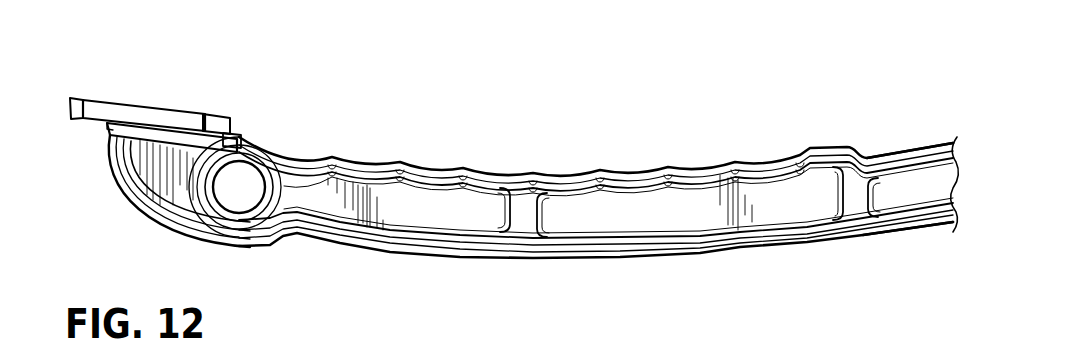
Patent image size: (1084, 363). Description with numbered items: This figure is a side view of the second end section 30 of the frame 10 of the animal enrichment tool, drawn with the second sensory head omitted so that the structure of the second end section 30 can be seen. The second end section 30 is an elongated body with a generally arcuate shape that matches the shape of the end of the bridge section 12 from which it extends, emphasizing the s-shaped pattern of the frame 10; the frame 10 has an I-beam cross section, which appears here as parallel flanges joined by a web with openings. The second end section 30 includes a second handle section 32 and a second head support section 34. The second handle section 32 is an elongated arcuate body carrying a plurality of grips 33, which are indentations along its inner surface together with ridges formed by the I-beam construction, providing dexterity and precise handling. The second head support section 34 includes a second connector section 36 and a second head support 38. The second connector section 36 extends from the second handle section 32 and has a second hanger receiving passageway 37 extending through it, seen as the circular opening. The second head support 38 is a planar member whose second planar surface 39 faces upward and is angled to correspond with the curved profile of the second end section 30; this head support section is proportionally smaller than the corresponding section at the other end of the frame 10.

The frame 10 is at (910, 233).
The bridge section 12 is at (891, 150).
The second end section 30 is at (610, 262).
The second handle section 32 is at (487, 260).
The grips 33 is at (483, 167).
The second head support section 34 is at (237, 135).
The second connector section 36 is at (143, 207).
The second hanger receiving passageway 37 is at (240, 200).
The second head support 38 is at (86, 124).
The second planar surface 39 is at (123, 100).